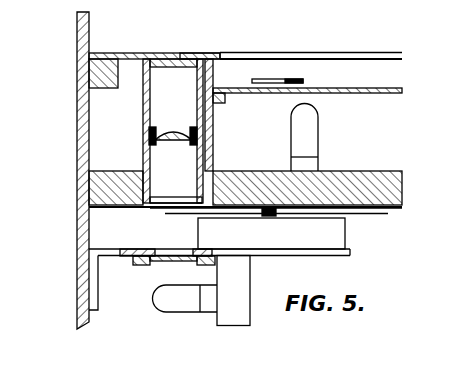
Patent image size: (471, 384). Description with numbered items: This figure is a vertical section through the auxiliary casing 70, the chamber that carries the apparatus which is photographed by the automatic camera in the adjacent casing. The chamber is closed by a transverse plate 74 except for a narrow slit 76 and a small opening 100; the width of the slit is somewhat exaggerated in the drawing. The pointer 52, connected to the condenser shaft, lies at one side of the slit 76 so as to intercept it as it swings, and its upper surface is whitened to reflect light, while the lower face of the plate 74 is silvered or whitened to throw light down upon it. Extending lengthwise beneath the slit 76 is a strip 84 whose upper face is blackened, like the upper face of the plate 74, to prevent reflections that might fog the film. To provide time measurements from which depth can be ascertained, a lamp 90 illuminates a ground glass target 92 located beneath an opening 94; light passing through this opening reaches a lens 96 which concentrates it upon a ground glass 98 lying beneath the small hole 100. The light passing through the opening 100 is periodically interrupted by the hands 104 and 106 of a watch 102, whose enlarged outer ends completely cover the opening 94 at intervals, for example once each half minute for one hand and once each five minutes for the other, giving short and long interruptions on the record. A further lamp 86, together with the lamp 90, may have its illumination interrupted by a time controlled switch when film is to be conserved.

The auxiliary casing 70 is at (83, 154).
The transverse plate 74 is at (132, 52).
The slit 76 is at (291, 52).
The small opening 100 is at (177, 58).
The ground glass 98 is at (193, 54).
The lens 96 is at (174, 130).
The opening 94 is at (178, 194).
The strip 84 is at (345, 93).
The pointer 52 is at (296, 80).
The lamp 86 is at (316, 145).
The hand of watch 106 is at (362, 214).
The hand of watch 104 is at (172, 210).
The watch 102 is at (313, 250).
The ground glass target 92 is at (162, 261).
The lamp 90 is at (181, 304).